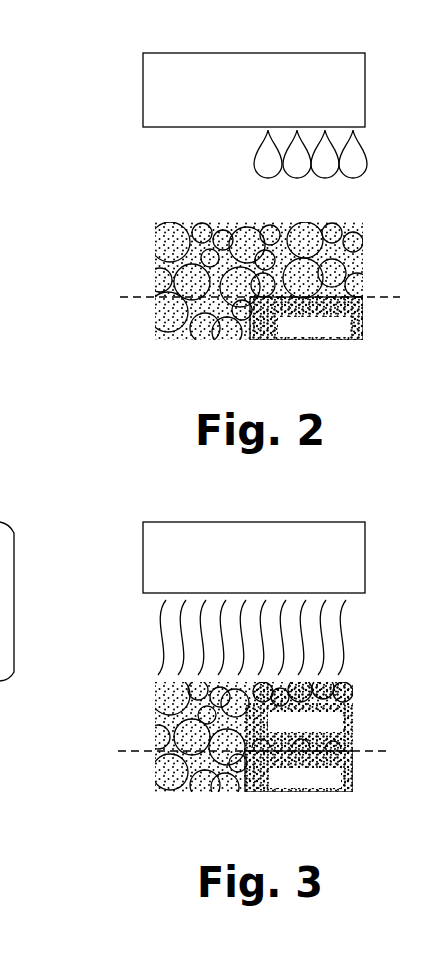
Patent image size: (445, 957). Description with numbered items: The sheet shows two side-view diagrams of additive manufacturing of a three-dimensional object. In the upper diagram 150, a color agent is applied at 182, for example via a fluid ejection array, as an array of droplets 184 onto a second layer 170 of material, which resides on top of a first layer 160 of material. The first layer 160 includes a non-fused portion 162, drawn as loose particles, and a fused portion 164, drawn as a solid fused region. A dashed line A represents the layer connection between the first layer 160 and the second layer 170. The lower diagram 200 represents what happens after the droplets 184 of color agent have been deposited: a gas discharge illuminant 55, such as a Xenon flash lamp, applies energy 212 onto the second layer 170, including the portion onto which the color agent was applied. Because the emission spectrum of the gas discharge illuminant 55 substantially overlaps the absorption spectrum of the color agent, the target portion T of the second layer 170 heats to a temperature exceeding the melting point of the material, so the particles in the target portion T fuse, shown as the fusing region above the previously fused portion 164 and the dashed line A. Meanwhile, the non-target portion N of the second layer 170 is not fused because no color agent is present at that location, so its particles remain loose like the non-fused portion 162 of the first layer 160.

In FIG. 2, the diagram 150 is at (118, 48).
In FIG. 2, the color agent application 182 is at (152, 91).
In FIG. 2, the droplets 184 is at (242, 172).
In FIG. 2, the second layer 170 is at (146, 258).
In FIG. 3, the second layer 170 is at (146, 708).
In FIG. 2, the first layer 160 is at (246, 308).
In FIG. 3, the first layer 160 is at (242, 758).
In FIG. 2, the non-fused portion 162 is at (193, 342).
In FIG. 3, the non-fused portion 162 is at (193, 794).
In FIG. 2, the fused portion 164 is at (365, 318).
In FIG. 3, the fused portion 164 is at (355, 768).
In FIG. 2, the dashed line A is at (257, 285).
In FIG. 3, the dashed line A is at (255, 740).
In FIG. 3, the diagram 200 is at (118, 518).
In FIG. 3, the gas discharge illuminant 55 is at (152, 562).
In FIG. 3, the energy 212 is at (358, 634).
In FIG. 3, the non-target portion N is at (183, 671).
In FIG. 3, the target portion T is at (346, 676).